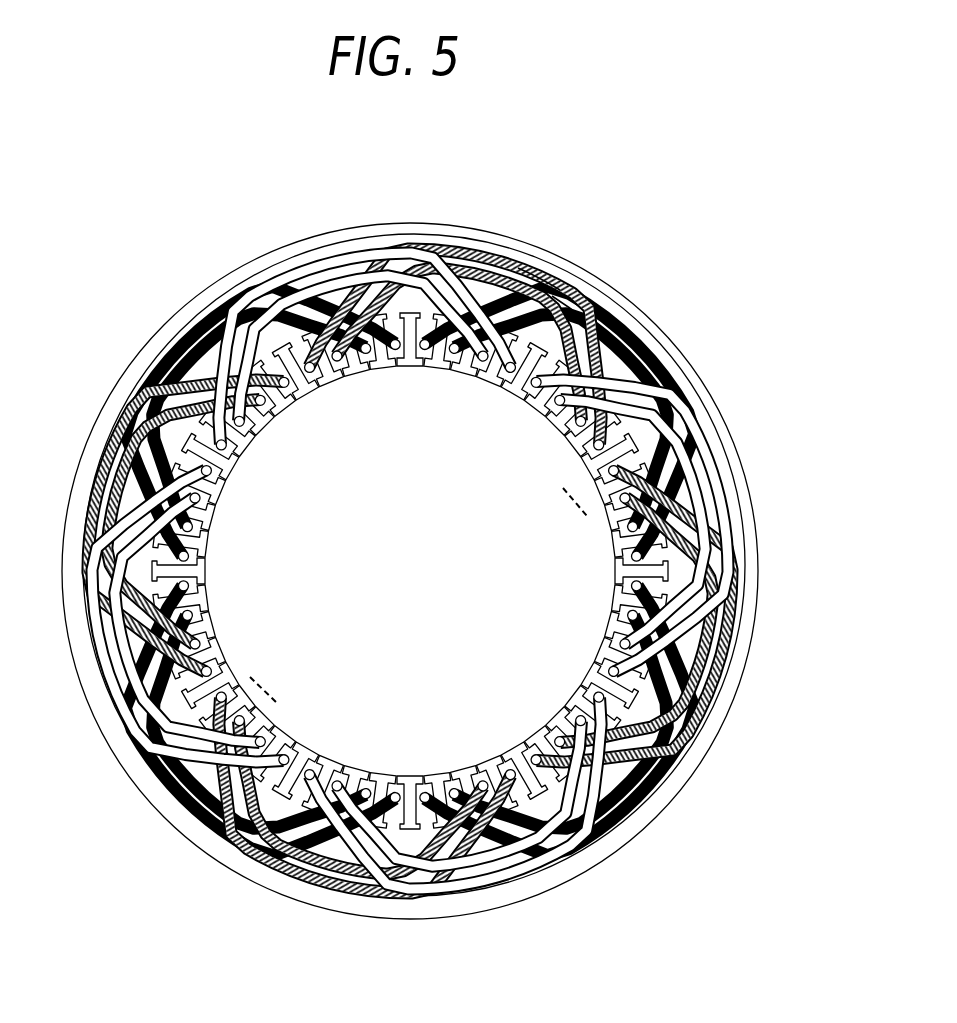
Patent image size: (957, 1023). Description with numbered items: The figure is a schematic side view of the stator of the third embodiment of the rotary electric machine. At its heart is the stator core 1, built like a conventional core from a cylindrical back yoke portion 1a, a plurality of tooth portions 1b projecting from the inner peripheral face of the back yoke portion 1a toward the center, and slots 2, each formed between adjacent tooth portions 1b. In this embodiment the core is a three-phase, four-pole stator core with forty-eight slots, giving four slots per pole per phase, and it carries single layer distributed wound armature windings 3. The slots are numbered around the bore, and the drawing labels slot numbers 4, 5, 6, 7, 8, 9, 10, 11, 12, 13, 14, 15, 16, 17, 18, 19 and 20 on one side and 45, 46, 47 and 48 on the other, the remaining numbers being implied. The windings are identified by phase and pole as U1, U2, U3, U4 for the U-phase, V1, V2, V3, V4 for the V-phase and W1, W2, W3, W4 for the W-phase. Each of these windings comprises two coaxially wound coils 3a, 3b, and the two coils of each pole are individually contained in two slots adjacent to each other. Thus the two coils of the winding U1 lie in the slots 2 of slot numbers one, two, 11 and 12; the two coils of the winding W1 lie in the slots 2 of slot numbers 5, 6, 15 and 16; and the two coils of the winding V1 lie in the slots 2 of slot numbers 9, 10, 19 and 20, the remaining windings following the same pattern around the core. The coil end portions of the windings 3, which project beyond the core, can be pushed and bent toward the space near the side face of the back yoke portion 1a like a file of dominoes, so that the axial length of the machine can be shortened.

The stator core 1 is at (411, 222).
The back yoke portion 1a is at (690, 386).
The tooth portions 1b is at (414, 366).
The slots 2 is at (396, 364).
The armature windings 3 is at (418, 571).
The coil 3a is at (534, 262).
The coil 3b is at (572, 276).
The winding U1 for the U-phase U1 is at (322, 258).
The winding U2 for the U-phase U2 is at (96, 620).
The winding U3 for the U-phase U3 is at (478, 896).
The winding U4 for the U-phase U4 is at (720, 492).
The winding V1 for the V-phase V1 is at (112, 480).
The winding V2 for the V-phase V2 is at (305, 884).
The winding V3 for the V-phase V3 is at (730, 652).
The winding V4 for the V-phase V4 is at (487, 256).
The winding W1 for the W-phase W1 is at (218, 320).
The winding W2 for the W-phase W2 is at (160, 800).
The winding W3 for the W-phase W3 is at (640, 844).
The winding W4 for the W-phase W4 is at (655, 350).
The slot number 4 is at (423, 365).
The slot number 5 is at (396, 365).
The slot number 6 is at (370, 367).
The slot number 7 is at (343, 375).
The slot number 8 is at (318, 385).
The slot number 9 is at (294, 399).
The slot number 10 is at (275, 415).
The slot number 11 is at (255, 435).
The slot number 12 is at (239, 457).
The slot number 13 is at (225, 481).
The slot number 14 is at (215, 506).
The slot number 15 is at (207, 533).
The slot number 16 is at (204, 557).
The slot number 17 is at (204, 583).
The slot number 18 is at (207, 609).
The slot number 19 is at (215, 635).
The slot number 20 is at (225, 661).
The slot number 45 is at (581, 457).
The slot number 46 is at (564, 435).
The slot number 47 is at (545, 415).
The slot number 48 is at (523, 399).